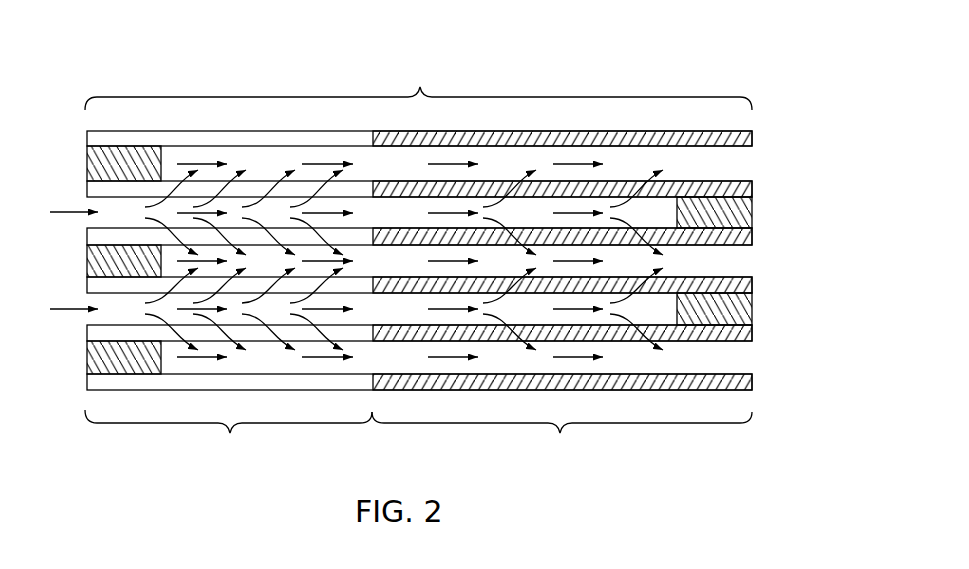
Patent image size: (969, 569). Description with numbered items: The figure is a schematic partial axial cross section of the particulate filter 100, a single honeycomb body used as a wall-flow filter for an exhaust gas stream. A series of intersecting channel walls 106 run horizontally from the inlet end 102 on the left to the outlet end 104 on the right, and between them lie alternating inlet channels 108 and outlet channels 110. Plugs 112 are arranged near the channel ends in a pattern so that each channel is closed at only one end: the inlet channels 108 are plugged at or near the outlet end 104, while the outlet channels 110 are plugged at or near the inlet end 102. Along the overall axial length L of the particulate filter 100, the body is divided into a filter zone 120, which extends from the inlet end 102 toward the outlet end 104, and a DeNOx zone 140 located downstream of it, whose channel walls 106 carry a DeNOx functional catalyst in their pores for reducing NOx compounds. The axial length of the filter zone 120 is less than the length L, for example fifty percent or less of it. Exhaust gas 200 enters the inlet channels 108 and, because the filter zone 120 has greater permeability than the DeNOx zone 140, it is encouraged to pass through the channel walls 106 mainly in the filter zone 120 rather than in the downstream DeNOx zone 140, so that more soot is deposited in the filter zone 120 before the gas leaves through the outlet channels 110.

The particulate filter 100 is at (661, 80).
The inlet end 102 is at (48, 92).
The outlet end 104 is at (763, 130).
The channel walls 106 is at (300, 131).
The inlet channels 108 is at (82, 201).
The outlet channels 110 is at (757, 163).
The plugs 112 is at (87, 149).
The filter zone 120 is at (228, 437).
The DeNOx zone 140 is at (562, 438).
The exhaust gas 200 is at (74, 215).
The axial length of the particulate filter L is at (418, 87).